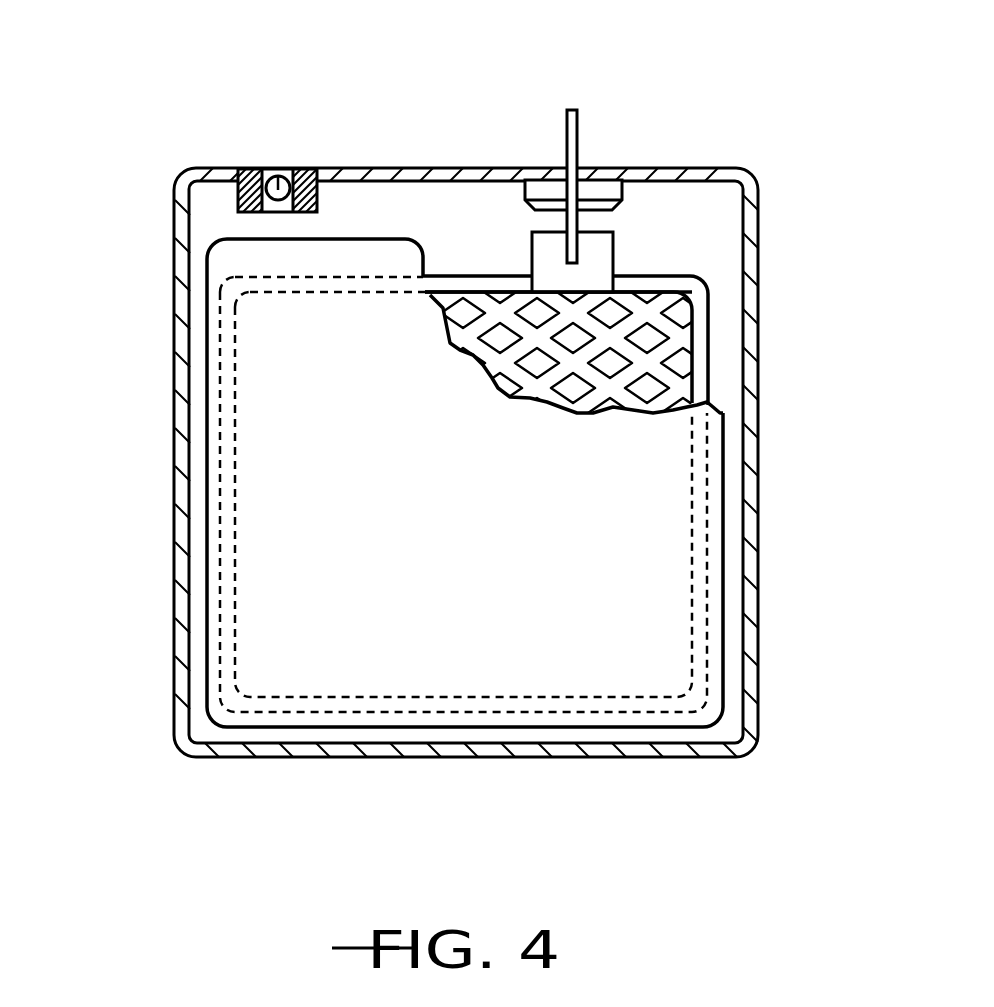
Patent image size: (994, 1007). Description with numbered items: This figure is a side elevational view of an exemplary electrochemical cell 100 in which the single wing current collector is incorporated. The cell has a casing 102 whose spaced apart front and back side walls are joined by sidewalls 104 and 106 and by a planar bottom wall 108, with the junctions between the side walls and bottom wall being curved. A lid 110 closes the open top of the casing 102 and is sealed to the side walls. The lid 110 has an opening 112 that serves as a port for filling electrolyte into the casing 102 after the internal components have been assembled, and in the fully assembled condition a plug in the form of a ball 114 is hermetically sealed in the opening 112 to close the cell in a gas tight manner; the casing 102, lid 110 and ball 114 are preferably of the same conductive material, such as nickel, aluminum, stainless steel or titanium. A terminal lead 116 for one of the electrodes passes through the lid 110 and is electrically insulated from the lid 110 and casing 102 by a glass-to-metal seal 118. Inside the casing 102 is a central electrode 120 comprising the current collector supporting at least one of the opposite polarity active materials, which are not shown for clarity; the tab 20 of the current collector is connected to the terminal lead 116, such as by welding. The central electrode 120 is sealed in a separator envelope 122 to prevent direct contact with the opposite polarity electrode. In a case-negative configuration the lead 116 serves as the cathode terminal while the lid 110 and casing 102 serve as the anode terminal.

The electrochemical cell 100 is at (725, 128).
The casing 102 is at (760, 490).
The sidewall 104 is at (760, 348).
The sidewall 106 is at (178, 360).
The bottom wall 108 is at (620, 747).
The lid 110 is at (437, 168).
The opening 112 is at (303, 175).
The ball 114 is at (277, 176).
The terminal lead 116 is at (578, 133).
The glass-to-metal seal 118 is at (597, 190).
The central electrode 120 is at (713, 292).
The separator envelope 122 is at (752, 398).
The tab 20 is at (600, 257).